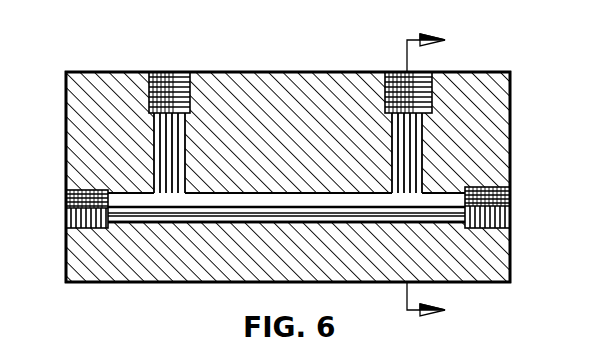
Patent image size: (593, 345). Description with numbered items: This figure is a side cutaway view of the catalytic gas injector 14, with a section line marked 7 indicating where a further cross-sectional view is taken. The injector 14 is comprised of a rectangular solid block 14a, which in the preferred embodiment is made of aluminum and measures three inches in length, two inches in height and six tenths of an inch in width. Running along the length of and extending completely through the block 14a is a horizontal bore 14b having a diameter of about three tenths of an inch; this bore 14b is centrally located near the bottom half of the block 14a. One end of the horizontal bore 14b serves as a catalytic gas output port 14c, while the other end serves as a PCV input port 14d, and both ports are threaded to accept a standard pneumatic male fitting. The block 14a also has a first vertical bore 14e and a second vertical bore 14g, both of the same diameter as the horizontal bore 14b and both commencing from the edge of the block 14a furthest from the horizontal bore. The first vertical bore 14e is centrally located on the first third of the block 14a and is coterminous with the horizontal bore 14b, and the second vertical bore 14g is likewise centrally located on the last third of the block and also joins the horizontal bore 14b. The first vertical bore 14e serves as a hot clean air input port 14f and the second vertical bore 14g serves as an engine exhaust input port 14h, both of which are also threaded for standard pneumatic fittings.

The catalytic gas injector 14 is at (277, 58).
The rectangular solid block 14a is at (343, 72).
The horizontal bore 14b is at (242, 218).
The catalytic gas output port 14c is at (511, 190).
The PCV input port 14d is at (67, 205).
The first vertical bore 14e is at (157, 137).
The hot clean air input port 14f is at (173, 72).
The second vertical bore 14g is at (422, 138).
The engine exhaust input port 14h is at (398, 72).
The section line 7- 7 is at (436, 175).